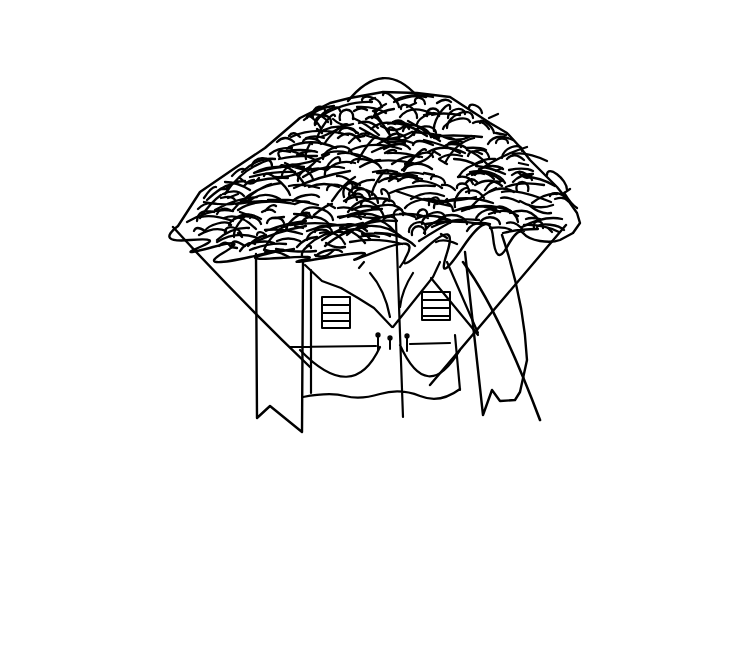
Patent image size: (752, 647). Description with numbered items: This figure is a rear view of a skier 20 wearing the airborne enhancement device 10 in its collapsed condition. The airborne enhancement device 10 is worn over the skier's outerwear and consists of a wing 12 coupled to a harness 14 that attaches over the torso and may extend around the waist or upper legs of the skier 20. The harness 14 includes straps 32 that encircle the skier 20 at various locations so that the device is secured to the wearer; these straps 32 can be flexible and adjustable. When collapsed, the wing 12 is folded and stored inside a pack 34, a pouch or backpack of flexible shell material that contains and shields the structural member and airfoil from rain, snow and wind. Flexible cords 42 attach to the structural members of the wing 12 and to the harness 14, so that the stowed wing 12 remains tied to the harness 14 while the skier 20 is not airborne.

The airborne enhancement device 10 is at (522, 102).
The wing 12 is at (231, 140).
The harness 14 is at (516, 358).
The skier 20 is at (523, 309).
The straps 32 is at (338, 275).
The pack 34 is at (463, 332).
The flexible cords 42 is at (222, 276).